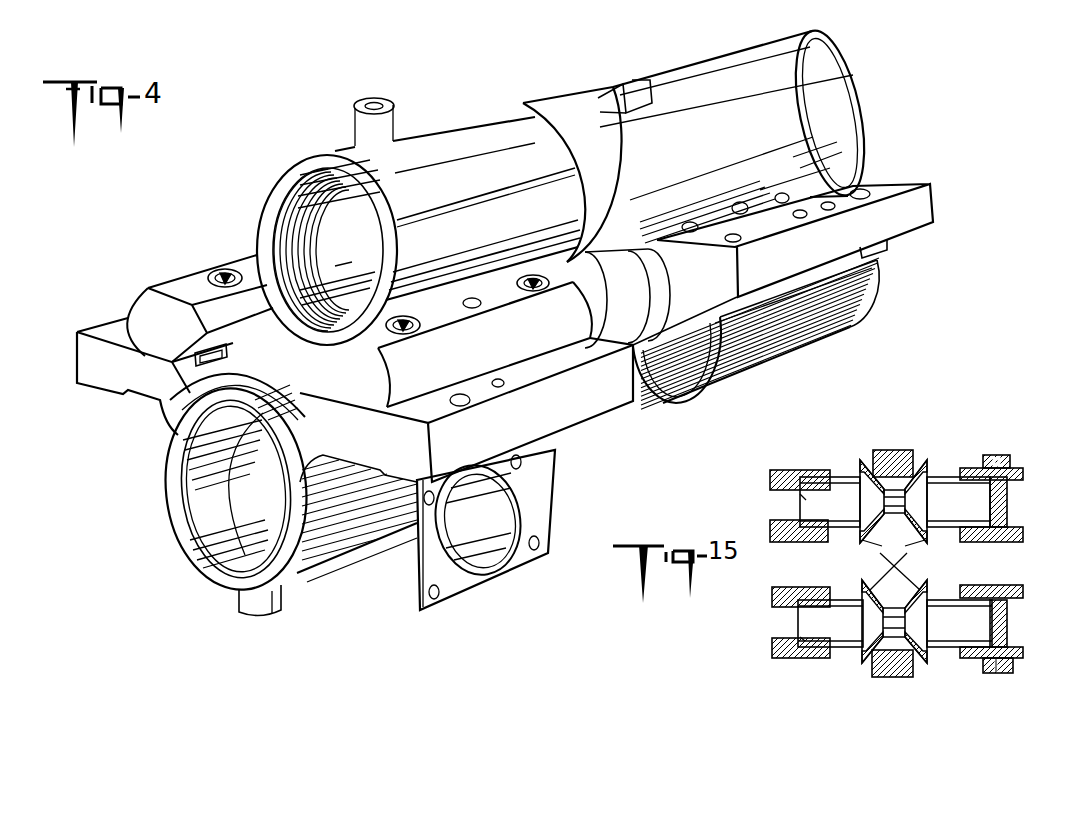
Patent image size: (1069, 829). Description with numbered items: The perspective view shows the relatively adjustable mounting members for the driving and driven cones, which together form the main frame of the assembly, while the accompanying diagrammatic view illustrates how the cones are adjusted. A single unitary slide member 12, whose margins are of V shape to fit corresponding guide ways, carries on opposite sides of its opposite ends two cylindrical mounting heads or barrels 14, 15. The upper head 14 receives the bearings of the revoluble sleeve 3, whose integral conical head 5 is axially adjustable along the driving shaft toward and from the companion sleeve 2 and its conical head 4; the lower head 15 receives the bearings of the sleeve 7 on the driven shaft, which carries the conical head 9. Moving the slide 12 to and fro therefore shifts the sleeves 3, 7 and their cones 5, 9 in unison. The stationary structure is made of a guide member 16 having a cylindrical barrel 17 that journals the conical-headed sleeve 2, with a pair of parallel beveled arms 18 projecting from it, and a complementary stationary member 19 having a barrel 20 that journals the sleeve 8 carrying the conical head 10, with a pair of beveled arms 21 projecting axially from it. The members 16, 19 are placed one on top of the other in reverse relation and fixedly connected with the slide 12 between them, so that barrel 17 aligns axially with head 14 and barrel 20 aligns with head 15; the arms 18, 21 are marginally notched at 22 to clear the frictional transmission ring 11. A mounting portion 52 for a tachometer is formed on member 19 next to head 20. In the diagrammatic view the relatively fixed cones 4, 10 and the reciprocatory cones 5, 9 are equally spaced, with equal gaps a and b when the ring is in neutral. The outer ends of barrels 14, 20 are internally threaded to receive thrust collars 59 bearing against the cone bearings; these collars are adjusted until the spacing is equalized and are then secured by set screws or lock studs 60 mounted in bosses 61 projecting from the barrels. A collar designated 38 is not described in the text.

In FIG. 15, the revoluble sleeve 2 is at (830, 502).
In FIG. 15, the revoluble sleeve 3 is at (958, 502).
In FIG. 15, the conical head 4 is at (872, 501).
In FIG. 15, the conical head 5 is at (916, 501).
In FIG. 15, the sleeve 7 is at (830, 623).
In FIG. 15, the sleeve 8 is at (959, 623).
In FIG. 15, the conical head 9 is at (872, 621).
In FIG. 15, the conical head 10 is at (917, 621).
In FIG. 15, the frictional transmission ring 11 is at (895, 450).
In FIG. 4, the slide member 12 is at (237, 353).
In FIG. 4, the mounting head or barrel 14 is at (458, 106).
In FIG. 15, the mounting head or barrel 14 is at (968, 468).
In FIG. 4, the mounting head or barrel 15 is at (780, 352).
In FIG. 15, the mounting head or barrel 15 is at (792, 660).
In FIG. 4, the guide member 16 is at (893, 232).
In FIG. 4, the cylindrical head or barrel 17 is at (718, 60).
In FIG. 15, the cylindrical head or barrel 17 is at (796, 470).
In FIG. 4, the beveled arms 18 is at (206, 270).
In FIG. 4, the stationary member 19 is at (77, 367).
In FIG. 4, the cylindrical head or barrel 20 is at (207, 574).
In FIG. 15, the cylindrical head or barrel 20 is at (1017, 587).
In FIG. 4, the beveled arms 21 is at (876, 258).
In FIG. 4, the notches 22 is at (627, 298).
In FIG. 4, the collar 38 is at (600, 86).
In FIG. 4, the mounting portion 52 is at (371, 597).
In FIG. 15, the thrust collars 59 is at (1004, 622).
In FIG. 15, the set screws or lock studs 60 is at (997, 455).
In FIG. 15, the bosses 61 is at (1005, 462).